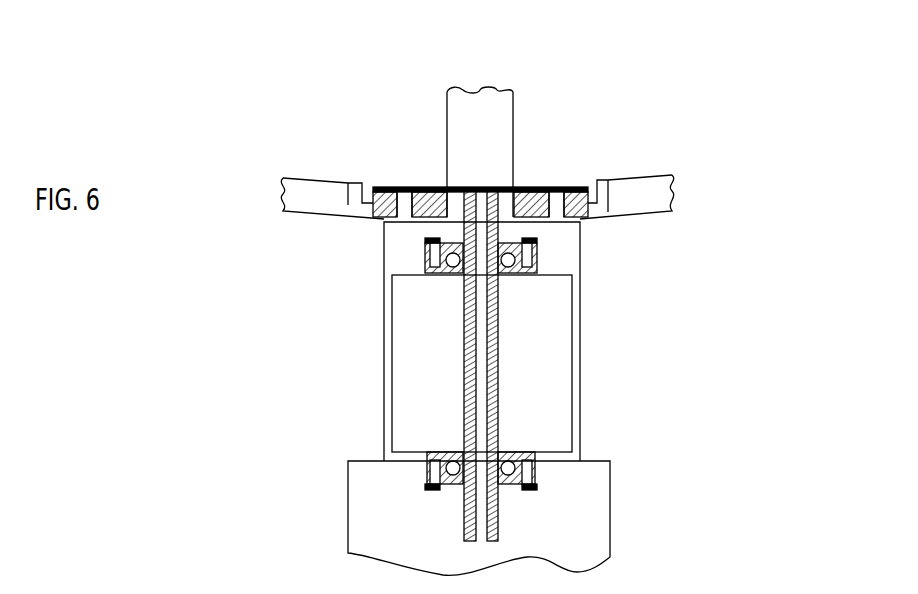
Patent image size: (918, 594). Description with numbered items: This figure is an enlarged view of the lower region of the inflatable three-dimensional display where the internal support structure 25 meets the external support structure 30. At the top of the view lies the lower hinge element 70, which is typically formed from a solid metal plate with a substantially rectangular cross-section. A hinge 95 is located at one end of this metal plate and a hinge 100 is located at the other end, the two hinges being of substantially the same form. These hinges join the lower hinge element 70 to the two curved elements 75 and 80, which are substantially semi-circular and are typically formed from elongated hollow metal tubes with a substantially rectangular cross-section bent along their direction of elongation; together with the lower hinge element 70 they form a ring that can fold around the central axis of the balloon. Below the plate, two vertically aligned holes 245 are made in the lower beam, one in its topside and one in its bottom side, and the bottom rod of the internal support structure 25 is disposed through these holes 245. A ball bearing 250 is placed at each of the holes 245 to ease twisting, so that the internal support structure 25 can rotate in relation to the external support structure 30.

The internal support structure 25 is at (478, 125).
The external support structure 30 is at (581, 340).
The lower hinge element 70 is at (442, 190).
The curved element 75 is at (297, 187).
The curved element 80 is at (645, 200).
The hinge 95 is at (402, 187).
The hinge 100 is at (563, 185).
The holes 245 is at (498, 277).
The ball bearing 250 is at (430, 253).